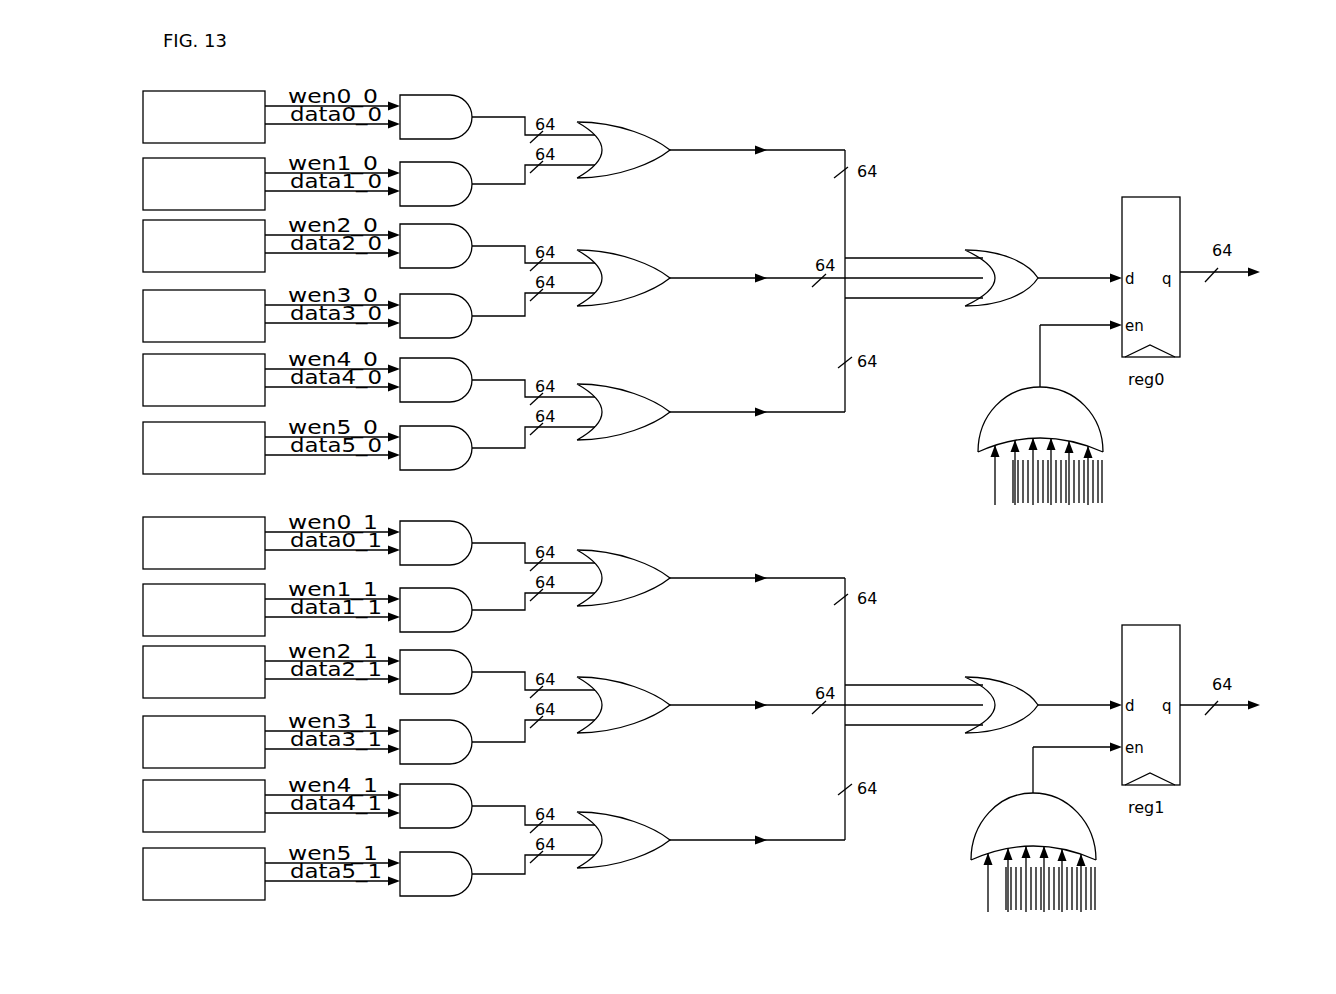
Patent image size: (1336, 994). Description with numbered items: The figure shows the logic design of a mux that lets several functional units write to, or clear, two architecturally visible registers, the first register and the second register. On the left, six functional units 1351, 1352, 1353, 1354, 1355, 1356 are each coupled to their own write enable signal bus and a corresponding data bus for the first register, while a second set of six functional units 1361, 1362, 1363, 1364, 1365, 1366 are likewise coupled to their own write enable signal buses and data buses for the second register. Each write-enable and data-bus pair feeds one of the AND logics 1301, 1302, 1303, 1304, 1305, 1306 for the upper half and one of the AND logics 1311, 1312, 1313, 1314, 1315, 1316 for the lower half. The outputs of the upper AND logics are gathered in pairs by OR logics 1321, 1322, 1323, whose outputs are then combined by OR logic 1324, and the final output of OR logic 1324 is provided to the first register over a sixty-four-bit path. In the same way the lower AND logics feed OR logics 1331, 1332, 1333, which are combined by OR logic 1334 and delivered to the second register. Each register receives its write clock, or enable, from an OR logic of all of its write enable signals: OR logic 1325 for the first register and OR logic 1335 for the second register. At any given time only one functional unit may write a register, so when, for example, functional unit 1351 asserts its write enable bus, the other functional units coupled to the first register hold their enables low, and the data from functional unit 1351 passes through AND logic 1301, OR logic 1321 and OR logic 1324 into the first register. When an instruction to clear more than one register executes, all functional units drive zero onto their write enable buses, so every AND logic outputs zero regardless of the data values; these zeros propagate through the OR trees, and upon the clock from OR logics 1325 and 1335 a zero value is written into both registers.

The functional unit 1351 is at (204, 117).
The functional unit 1352 is at (204, 184).
The functional unit 1353 is at (204, 246).
The functional unit 1354 is at (204, 316).
The functional unit 1355 is at (204, 380).
The functional unit 1356 is at (204, 448).
The functional unit 1361 is at (204, 543).
The functional unit 1362 is at (204, 610).
The functional unit 1363 is at (204, 672).
The functional unit 1364 is at (204, 742).
The functional unit 1365 is at (204, 806).
The functional unit 1366 is at (204, 874).
The AND logic 1301 is at (497, 117).
The AND logic 1302 is at (497, 184).
The AND logic 1303 is at (497, 246).
The AND logic 1304 is at (497, 315).
The AND logic 1305 is at (497, 380).
The AND logic 1306 is at (497, 448).
The AND logic 1311 is at (497, 543).
The AND logic 1312 is at (497, 610).
The AND logic 1313 is at (497, 672).
The AND logic 1314 is at (497, 742).
The AND logic 1315 is at (497, 806).
The AND logic 1316 is at (497, 874).
The OR logic 1321 is at (711, 150).
The OR logic 1322 is at (780, 278).
The OR logic 1323 is at (711, 412).
The OR logic 1324 is at (1043, 272).
The OR logic 1325 is at (1069, 463).
The OR logic 1331 is at (711, 578).
The OR logic 1332 is at (780, 705).
The OR logic 1333 is at (711, 840).
The OR logic 1334 is at (1043, 699).
The OR logic 1335 is at (1059, 870).